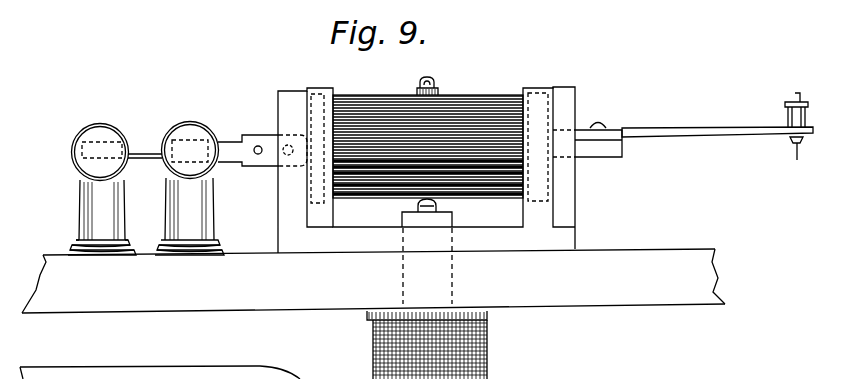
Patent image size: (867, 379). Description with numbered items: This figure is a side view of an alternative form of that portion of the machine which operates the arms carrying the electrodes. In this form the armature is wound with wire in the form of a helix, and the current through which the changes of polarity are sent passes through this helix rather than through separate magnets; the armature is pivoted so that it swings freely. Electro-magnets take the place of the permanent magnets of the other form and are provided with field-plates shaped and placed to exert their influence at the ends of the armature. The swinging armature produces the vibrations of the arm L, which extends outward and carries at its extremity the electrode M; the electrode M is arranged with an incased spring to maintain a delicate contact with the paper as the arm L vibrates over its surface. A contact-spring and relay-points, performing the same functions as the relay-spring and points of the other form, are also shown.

The arm L is at (701, 121).
The electrode M is at (795, 111).